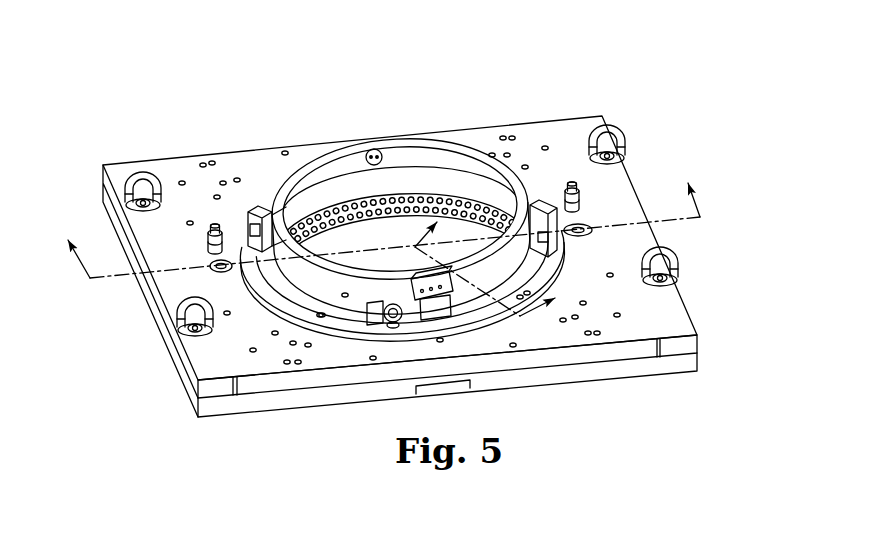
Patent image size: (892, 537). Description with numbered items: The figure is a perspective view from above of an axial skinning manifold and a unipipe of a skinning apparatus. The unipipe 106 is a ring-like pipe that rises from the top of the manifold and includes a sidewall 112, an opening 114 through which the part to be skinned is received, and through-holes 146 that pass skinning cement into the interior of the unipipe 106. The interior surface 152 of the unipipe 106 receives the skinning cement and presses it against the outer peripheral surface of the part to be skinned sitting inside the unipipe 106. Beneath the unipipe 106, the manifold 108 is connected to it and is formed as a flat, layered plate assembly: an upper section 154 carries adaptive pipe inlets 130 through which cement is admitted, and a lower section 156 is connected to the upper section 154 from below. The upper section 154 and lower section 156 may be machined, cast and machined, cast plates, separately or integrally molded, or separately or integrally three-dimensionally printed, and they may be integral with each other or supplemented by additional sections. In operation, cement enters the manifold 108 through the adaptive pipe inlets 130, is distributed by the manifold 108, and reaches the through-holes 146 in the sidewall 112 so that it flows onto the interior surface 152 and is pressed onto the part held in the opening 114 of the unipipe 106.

The unipipe 106 is at (483, 168).
The manifold 108 is at (103, 152).
The sidewall 112 is at (283, 204).
The opening 114 is at (453, 142).
The adaptive pipe inlets 130 is at (223, 258).
The through-holes 146 is at (344, 194).
The interior surface 152 is at (410, 152).
The upper section 154 is at (697, 343).
The lower section 156 is at (694, 359).